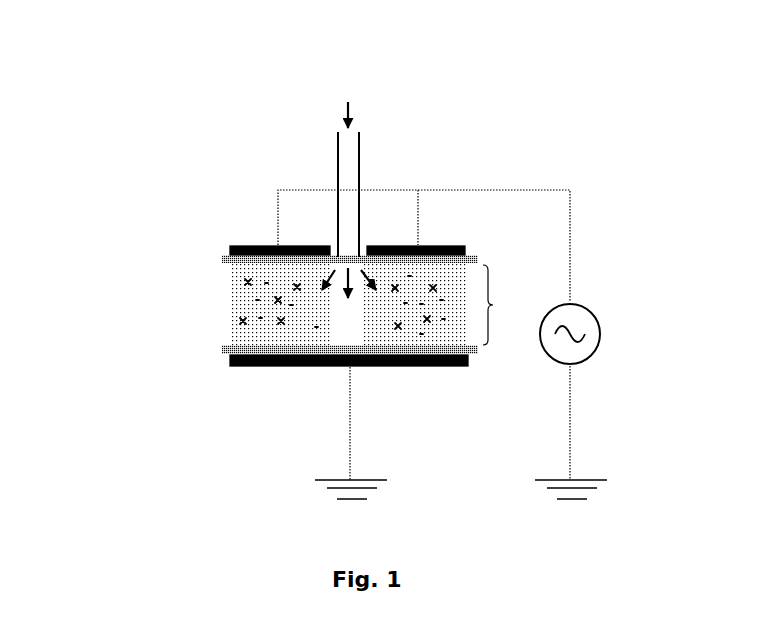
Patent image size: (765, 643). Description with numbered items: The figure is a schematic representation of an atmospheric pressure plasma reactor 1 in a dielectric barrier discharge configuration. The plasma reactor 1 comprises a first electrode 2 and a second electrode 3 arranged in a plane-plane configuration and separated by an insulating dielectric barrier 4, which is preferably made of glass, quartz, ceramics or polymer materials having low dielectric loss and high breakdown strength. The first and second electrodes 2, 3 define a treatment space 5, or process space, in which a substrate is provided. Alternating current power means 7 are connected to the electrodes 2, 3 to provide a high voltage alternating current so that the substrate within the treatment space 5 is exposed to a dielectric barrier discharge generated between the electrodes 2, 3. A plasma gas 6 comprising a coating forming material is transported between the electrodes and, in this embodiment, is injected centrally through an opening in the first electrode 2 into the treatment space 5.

The plasma reactor 1 is at (440, 153).
The first electrode 2 is at (268, 245).
The second electrode 3 is at (268, 366).
The insulating dielectric barrier 4 is at (226, 261).
The treatment space 5 is at (212, 309).
The plasma gas 6 is at (338, 107).
The alternating current power means 7 is at (600, 297).